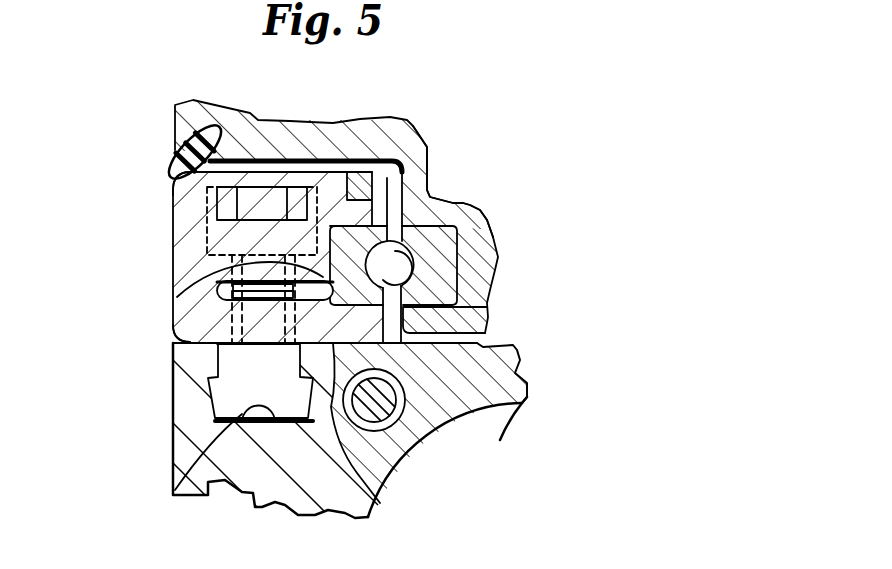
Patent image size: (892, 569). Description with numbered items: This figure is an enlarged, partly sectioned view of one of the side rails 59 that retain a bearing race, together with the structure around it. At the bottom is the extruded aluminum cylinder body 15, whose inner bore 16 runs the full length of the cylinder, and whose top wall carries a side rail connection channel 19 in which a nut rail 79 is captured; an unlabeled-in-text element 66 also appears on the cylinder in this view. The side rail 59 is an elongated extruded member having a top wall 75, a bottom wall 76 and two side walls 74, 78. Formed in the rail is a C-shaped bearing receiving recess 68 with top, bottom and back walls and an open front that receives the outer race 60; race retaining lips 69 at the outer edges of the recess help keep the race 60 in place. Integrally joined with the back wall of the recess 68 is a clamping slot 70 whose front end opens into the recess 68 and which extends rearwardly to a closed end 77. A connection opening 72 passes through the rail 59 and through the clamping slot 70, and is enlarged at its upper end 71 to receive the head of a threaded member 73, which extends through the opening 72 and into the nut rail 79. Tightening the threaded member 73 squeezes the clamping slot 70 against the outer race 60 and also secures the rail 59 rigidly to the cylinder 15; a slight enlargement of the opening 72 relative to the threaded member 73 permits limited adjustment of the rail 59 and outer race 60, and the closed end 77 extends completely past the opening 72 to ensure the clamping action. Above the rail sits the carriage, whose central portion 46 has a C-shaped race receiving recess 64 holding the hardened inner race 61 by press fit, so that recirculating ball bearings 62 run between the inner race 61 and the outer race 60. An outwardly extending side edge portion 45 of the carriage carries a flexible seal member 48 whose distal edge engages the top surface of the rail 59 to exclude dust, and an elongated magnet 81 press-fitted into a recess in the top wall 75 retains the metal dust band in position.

The cylinder body 15 is at (458, 403).
The inner bore 16 is at (403, 457).
The side rail connection channel 19 is at (173, 490).
The side edge portion 45 is at (262, 135).
The central portion 46 is at (483, 275).
The seal member 48 is at (174, 176).
The side rail 59 is at (176, 212).
The outer race 60 is at (400, 230).
The inner race 61 is at (450, 248).
The ball bearing 62 is at (450, 306).
The race receiving recess 64 is at (520, 373).
The edge 66 is at (530, 403).
The bearing receiving recess 68 is at (193, 343).
The race retaining lip 69 is at (457, 233).
The clamping slot 70 is at (177, 262).
The enlarged upper end 71 is at (205, 240).
The connection opening 72 is at (217, 327).
The threaded member 73 is at (215, 395).
The side wall 74 is at (176, 204).
The top wall 75 is at (323, 157).
The bottom wall 76 is at (378, 498).
The closed end 77 is at (217, 290).
The side wall 78 is at (410, 190).
The nut rail 79 is at (212, 405).
The magnet 81 is at (395, 170).